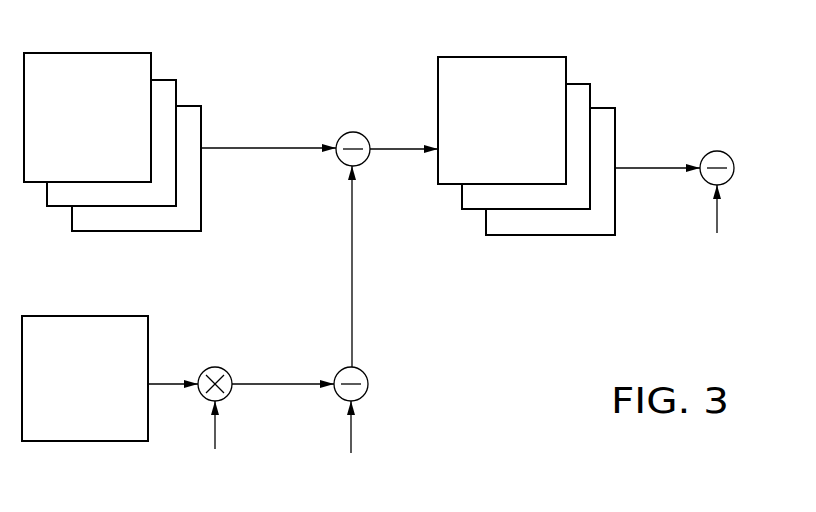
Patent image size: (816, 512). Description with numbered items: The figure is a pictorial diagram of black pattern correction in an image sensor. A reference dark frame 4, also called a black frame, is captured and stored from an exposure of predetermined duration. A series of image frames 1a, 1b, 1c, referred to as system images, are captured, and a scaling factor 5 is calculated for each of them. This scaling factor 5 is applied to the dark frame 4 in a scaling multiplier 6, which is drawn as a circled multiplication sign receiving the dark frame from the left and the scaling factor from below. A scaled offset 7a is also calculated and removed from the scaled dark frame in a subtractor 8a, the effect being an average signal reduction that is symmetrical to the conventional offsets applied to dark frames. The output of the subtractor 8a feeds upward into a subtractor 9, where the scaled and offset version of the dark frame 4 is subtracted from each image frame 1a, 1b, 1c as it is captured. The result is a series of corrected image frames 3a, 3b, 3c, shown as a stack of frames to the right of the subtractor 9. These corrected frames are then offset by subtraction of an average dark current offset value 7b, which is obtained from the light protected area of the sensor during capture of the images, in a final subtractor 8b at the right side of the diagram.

The image frame 1a is at (107, 53).
The image frame 1b is at (162, 80).
The image frame 1c is at (193, 106).
The subtractor 9 is at (360, 131).
The corrected image frame 3a is at (502, 99).
The corrected image frame 3b is at (536, 129).
The corrected image frame 3c is at (569, 159).
The subtractor 8b is at (731, 152).
The average dark current offset value 7b is at (731, 266).
The reference dark frame 4 is at (110, 316).
The scaling multiplier 6 is at (220, 367).
The scaling factor 5 is at (233, 452).
The subtractor 8a is at (364, 373).
The scaled offset 7a is at (382, 453).